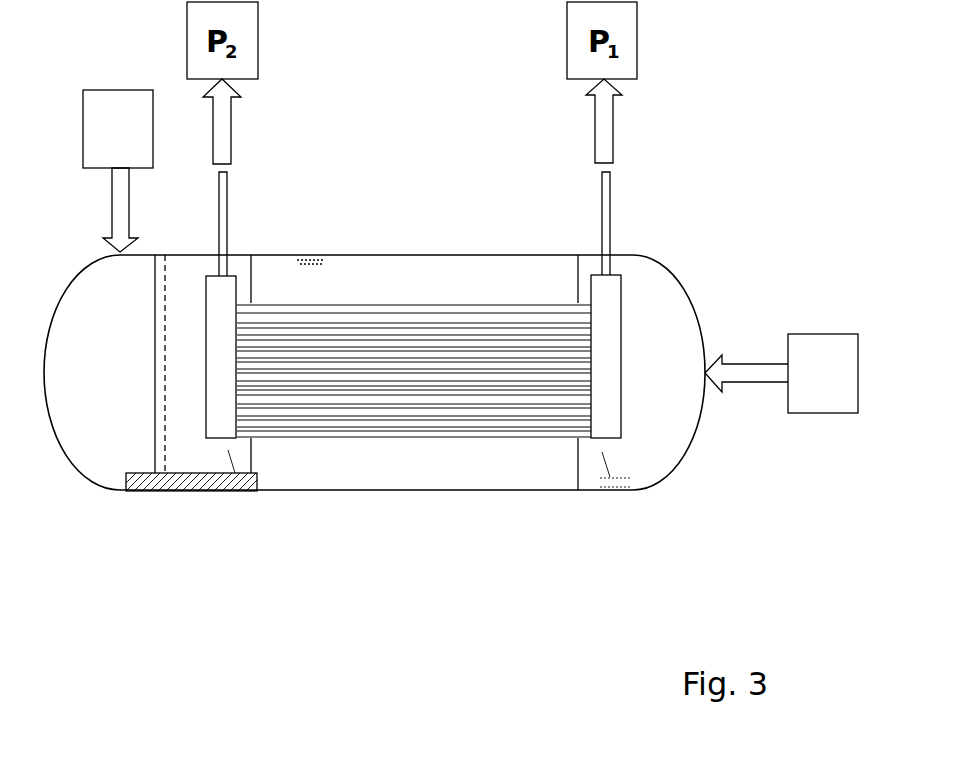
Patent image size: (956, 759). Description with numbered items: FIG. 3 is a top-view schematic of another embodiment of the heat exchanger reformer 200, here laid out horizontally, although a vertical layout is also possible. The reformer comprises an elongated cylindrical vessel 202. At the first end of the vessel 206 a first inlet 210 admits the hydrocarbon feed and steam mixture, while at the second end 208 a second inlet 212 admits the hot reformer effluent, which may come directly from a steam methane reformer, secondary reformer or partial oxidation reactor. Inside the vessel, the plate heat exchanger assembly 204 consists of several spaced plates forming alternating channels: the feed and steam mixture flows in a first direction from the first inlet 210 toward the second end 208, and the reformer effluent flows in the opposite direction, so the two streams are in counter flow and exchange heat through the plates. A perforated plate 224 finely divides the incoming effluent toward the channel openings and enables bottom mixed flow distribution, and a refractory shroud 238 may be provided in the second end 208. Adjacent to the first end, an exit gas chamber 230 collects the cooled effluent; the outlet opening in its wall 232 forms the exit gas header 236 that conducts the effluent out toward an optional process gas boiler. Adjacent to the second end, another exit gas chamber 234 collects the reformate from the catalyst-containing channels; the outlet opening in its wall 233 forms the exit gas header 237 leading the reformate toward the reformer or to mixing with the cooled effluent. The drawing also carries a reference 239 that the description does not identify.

The heat exchanger reformer 200 is at (755, 552).
The vessel 202 is at (492, 490).
The plate heat exchanger assembly 204 is at (420, 437).
The first end of the vessel 206 is at (645, 250).
The second end of the vessel 208 is at (171, 226).
The first inlet 210 is at (710, 382).
The second inlet 212 is at (101, 250).
The perforated plate 224 is at (164, 382).
The exit gas chamber 230 is at (607, 492).
The wall of exit gas chamber 232 is at (591, 390).
The wall of exit gas chamber 233 is at (236, 372).
The exit gas chamber 234 is at (222, 492).
The exit gas header 236 is at (610, 213).
The exit gas header 237 is at (227, 202).
The refractory shroud 238 is at (200, 491).
The ground connection 239 is at (306, 255).